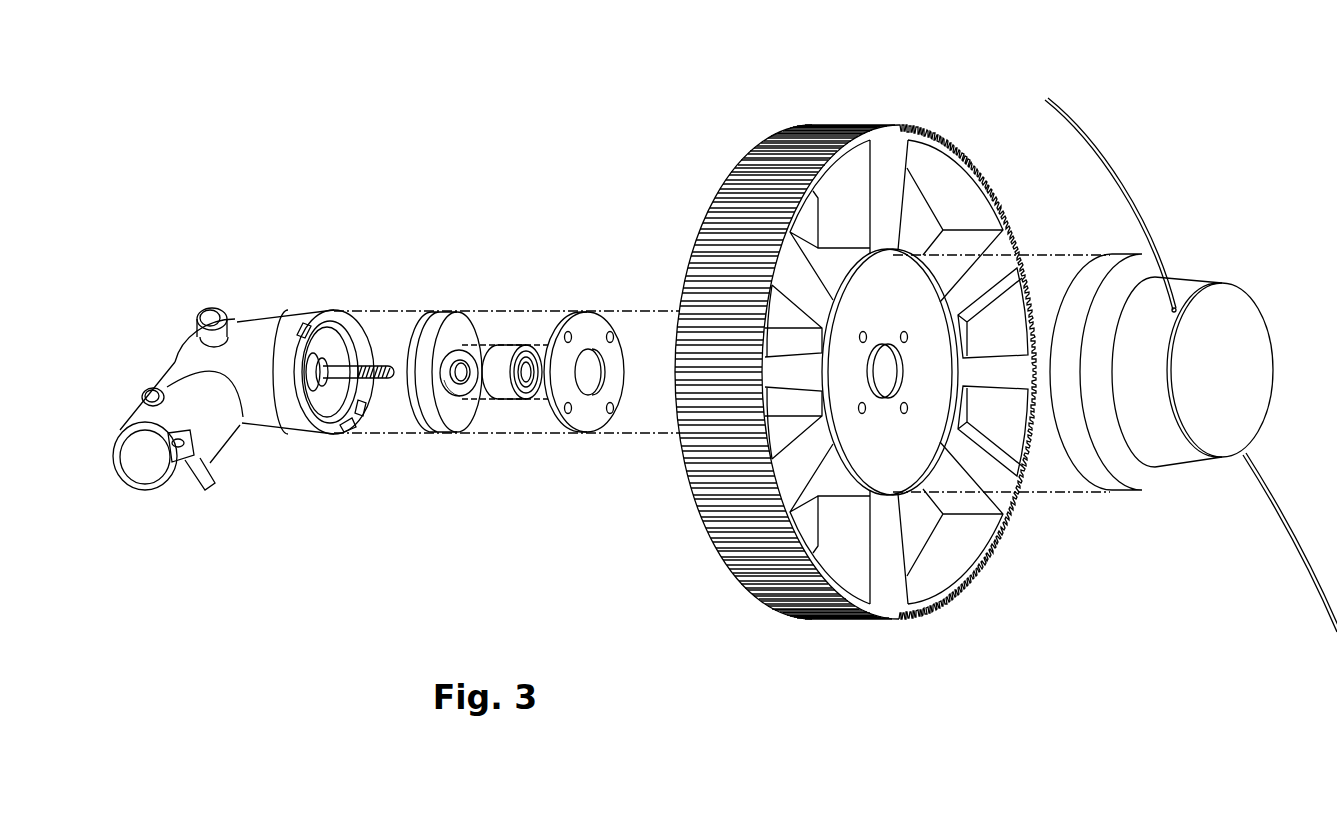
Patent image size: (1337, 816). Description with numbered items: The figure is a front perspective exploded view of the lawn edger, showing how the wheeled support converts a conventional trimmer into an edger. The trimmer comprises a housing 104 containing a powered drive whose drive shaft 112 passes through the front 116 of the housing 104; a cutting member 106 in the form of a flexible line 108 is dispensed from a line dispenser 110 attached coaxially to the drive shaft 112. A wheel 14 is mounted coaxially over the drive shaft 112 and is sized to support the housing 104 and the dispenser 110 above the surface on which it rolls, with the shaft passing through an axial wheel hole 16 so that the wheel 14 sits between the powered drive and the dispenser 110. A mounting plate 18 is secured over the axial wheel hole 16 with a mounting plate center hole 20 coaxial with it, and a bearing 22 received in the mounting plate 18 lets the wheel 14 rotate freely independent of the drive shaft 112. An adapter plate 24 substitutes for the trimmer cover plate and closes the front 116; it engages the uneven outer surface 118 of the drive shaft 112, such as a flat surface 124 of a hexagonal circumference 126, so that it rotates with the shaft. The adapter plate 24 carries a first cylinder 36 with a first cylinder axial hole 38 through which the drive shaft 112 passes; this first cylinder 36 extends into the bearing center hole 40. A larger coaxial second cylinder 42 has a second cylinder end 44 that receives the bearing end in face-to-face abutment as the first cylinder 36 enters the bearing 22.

The wheel 14 is at (845, 125).
The axial wheel hole 16 is at (895, 340).
The mounting plate 18 is at (595, 325).
The mounting plate center hole 20 is at (602, 396).
The bearing 22 is at (527, 345).
The adapter plate 24 is at (449, 432).
The first cylinder 36 is at (470, 365).
The first cylinder axial hole 38 is at (473, 395).
The bearing center hole 40 is at (540, 402).
The second cylinder 42 is at (448, 352).
The second cylinder end 44 is at (466, 358).
The housing 104 is at (262, 325).
The cutting member 106 is at (1072, 118).
The flexible line 108 is at (1125, 185).
The line dispenser 110 is at (1248, 318).
The drive shaft 112 is at (382, 355).
The front of the housing 116 is at (352, 325).
The uneven outer surface 118 is at (322, 333).
The flat surface 124 is at (338, 418).
The hexagonal circumference 126 is at (360, 406).